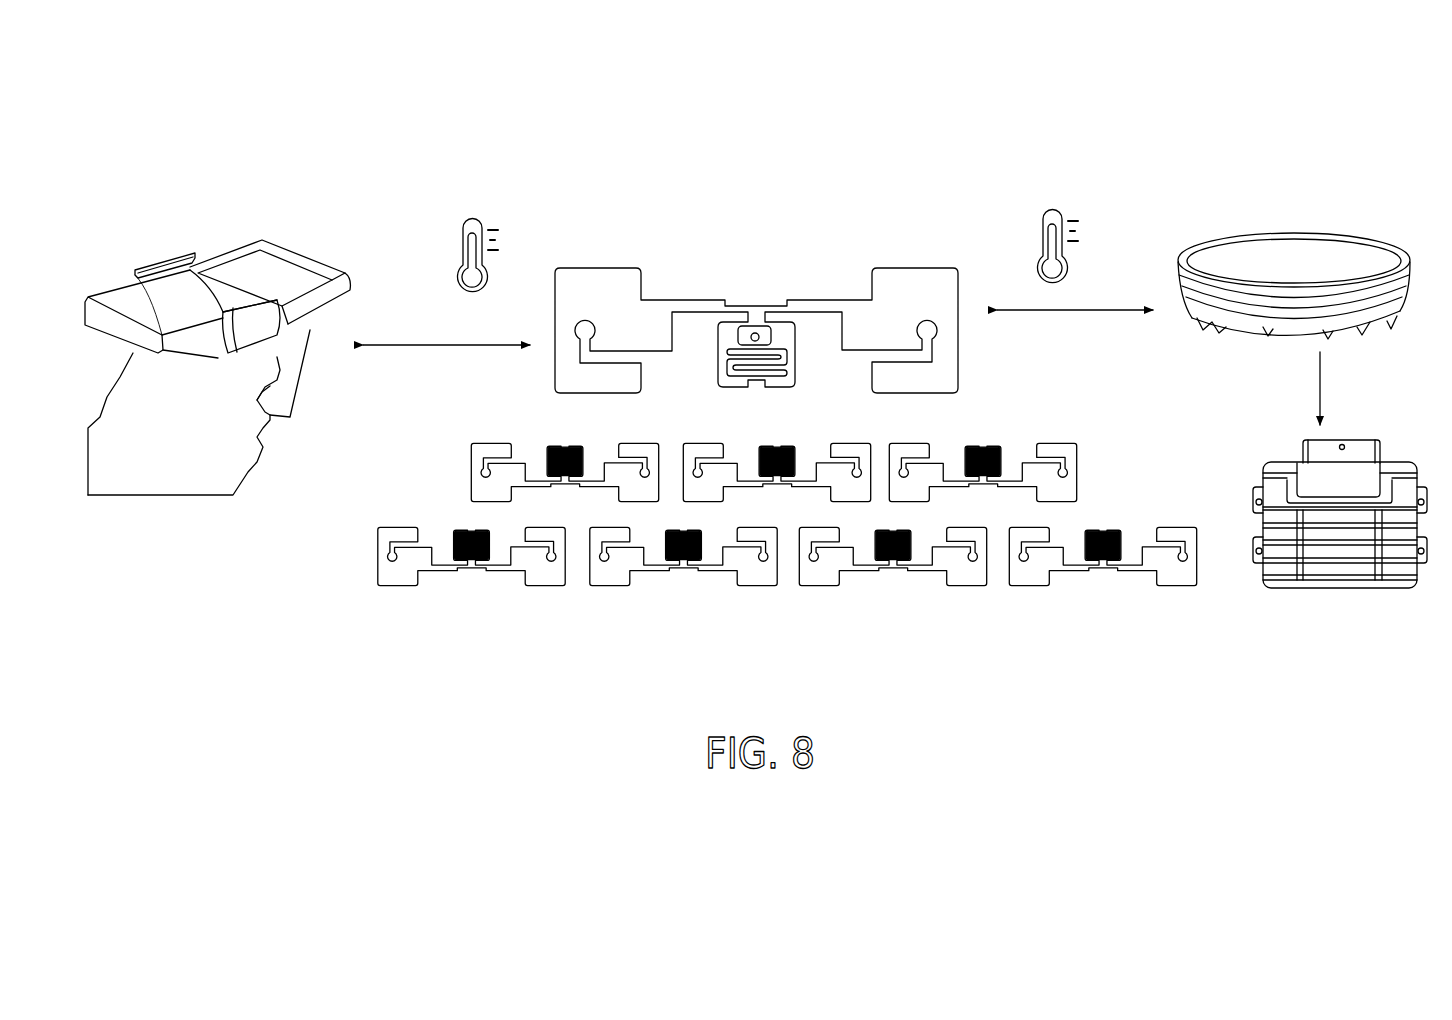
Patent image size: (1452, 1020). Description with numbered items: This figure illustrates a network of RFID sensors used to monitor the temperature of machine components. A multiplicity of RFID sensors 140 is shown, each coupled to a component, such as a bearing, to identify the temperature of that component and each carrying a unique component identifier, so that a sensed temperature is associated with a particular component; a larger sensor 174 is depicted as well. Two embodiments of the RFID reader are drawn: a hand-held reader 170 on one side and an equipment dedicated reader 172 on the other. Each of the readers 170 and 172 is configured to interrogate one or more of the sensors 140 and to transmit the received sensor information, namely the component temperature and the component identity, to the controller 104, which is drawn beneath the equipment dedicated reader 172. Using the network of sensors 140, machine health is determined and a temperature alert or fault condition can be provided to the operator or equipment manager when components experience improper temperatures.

The controller 104 is at (1420, 440).
The RFID sensor 140 is at (1067, 485).
The hand-held reader 170 is at (283, 253).
The equipment dedicated reader 172 is at (1345, 253).
The RFID tag with sensor 174 is at (440, 460).